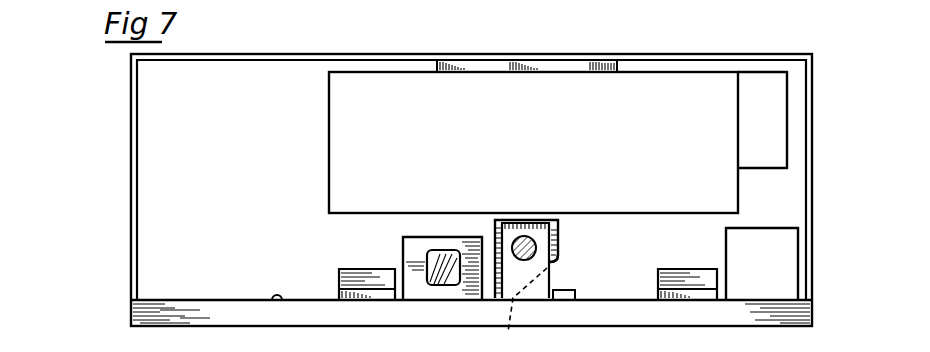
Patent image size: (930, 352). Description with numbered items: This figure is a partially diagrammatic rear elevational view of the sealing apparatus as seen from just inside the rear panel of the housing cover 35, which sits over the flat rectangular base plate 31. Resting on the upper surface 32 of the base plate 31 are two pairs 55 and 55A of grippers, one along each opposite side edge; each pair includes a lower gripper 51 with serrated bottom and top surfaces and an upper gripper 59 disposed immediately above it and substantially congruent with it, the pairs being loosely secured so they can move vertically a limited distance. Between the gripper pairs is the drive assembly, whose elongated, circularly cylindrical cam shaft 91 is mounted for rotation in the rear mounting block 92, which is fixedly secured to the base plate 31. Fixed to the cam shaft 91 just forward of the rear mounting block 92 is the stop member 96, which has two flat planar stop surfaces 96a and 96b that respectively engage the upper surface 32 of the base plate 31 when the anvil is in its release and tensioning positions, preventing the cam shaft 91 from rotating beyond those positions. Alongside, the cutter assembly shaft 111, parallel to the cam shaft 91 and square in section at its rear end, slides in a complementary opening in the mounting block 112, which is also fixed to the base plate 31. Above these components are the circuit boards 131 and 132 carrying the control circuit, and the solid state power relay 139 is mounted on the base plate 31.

The cover 35 is at (126, 93).
The base plate 31 is at (196, 318).
The upper surface 32 is at (278, 300).
The circuit board 132 is at (329, 104).
The circuit board 131 is at (787, 100).
The solid state power relay 139 is at (786, 228).
The pair of grippers 55A is at (347, 262).
The pair of grippers 55 is at (685, 261).
The upper gripper 59 is at (340, 276).
The lower gripper 51 is at (352, 300).
The mounting block 112 is at (402, 244).
The elongated shaft 111 is at (440, 286).
The stop member 96 is at (490, 227).
The rear mounting block 92 is at (551, 270).
The cam shaft 91 is at (524, 237).
The stop surface 96b is at (557, 222).
The stop surface 96a is at (508, 332).